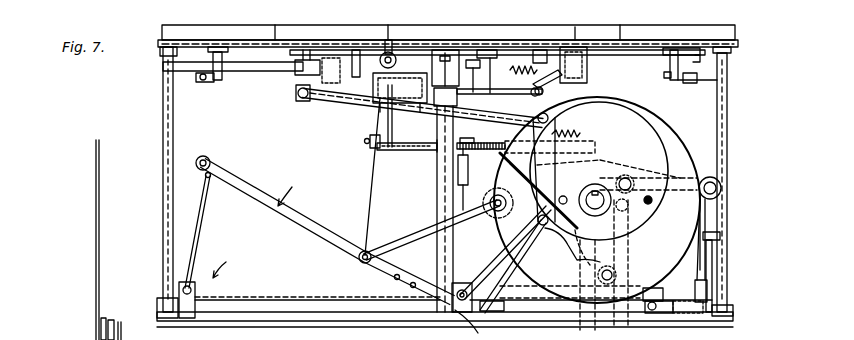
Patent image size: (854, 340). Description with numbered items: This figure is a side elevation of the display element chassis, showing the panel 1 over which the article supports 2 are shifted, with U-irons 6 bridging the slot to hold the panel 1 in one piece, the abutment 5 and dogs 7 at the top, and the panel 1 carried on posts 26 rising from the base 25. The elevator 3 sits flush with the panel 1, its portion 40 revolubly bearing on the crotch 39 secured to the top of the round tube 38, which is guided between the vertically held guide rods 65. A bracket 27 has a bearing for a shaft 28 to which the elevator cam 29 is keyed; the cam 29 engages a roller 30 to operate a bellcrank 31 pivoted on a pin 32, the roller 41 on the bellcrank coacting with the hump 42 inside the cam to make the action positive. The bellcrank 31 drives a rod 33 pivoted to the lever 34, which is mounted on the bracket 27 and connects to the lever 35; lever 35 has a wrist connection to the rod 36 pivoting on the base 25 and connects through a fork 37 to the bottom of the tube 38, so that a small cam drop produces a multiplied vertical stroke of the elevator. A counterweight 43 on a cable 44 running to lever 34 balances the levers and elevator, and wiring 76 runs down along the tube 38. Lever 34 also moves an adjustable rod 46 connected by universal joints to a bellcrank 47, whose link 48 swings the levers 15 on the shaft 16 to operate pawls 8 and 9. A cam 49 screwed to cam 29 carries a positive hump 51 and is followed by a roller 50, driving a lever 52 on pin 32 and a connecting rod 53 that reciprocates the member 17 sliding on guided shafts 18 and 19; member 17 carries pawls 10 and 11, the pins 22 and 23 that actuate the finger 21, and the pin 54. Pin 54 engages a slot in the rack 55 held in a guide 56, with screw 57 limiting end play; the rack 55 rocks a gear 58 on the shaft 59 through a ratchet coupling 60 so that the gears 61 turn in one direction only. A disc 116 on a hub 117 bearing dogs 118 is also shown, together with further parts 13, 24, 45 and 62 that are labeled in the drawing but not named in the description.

The panel 1 is at (157, 42).
The supports 2 is at (222, 25).
The elevator 3 is at (450, 48).
The abutment 5 is at (575, 30).
The U-irons 6 is at (587, 70).
The dogs 7 is at (226, 60).
The pawl 8 is at (210, 82).
The pawl 9 is at (665, 78).
The pawl 10 is at (690, 62).
The pawl 11 is at (332, 68).
The bracket 13 is at (213, 52).
The levers 15 is at (180, 75).
The shaft 16 is at (288, 300).
The member 17 is at (497, 101).
The guided shaft 18 is at (638, 57).
The guided shaft 19 is at (284, 72).
The finger 21 is at (546, 82).
The pin 22 is at (470, 75).
The pin 23 is at (494, 71).
The spring 24 is at (528, 62).
The base 25 is at (736, 322).
The posts 26 is at (728, 68).
The bracket 27 is at (708, 239).
The shaft 28 is at (595, 206).
The elevator cam 29 is at (684, 126).
The roller 30 is at (492, 199).
The bellcrank 31 is at (432, 230).
The pin 32 is at (462, 284).
The rod 33 is at (630, 268).
The lever 34 is at (603, 154).
The lever 35 is at (315, 218).
The rod 36 is at (222, 232).
The fork 37 is at (408, 279).
The tube 38 is at (436, 204).
The crotch 39 is at (499, 99).
The portion 40 is at (396, 62).
The hump or roller 41 is at (600, 276).
The hump 42 is at (551, 252).
The counterweight 43 is at (400, 92).
The cable 44 is at (371, 203).
The pin 45 is at (618, 270).
The adjustable rod 46 is at (640, 236).
The bellcrank 47 is at (712, 262).
The link 48 is at (722, 236).
The cam 49 is at (647, 145).
The roller 50 is at (553, 246).
The positive hump 51 is at (516, 264).
The lever 52 is at (505, 252).
The connecting rod 53 is at (357, 108).
The pin 54 is at (401, 116).
The rack 55 is at (422, 152).
The guide 56 is at (424, 139).
The screw 57 is at (364, 140).
The gear 58 is at (481, 137).
The shaft 59 is at (468, 160).
The ratchet coupling 60 is at (479, 189).
The gears 61 is at (477, 325).
The spring lever 62 is at (558, 130).
The guide rods 65 is at (121, 330).
The wiring 76 is at (263, 228).
The disc 116 is at (96, 224).
The hub 117 is at (112, 320).
The dogs 118 is at (104, 318).